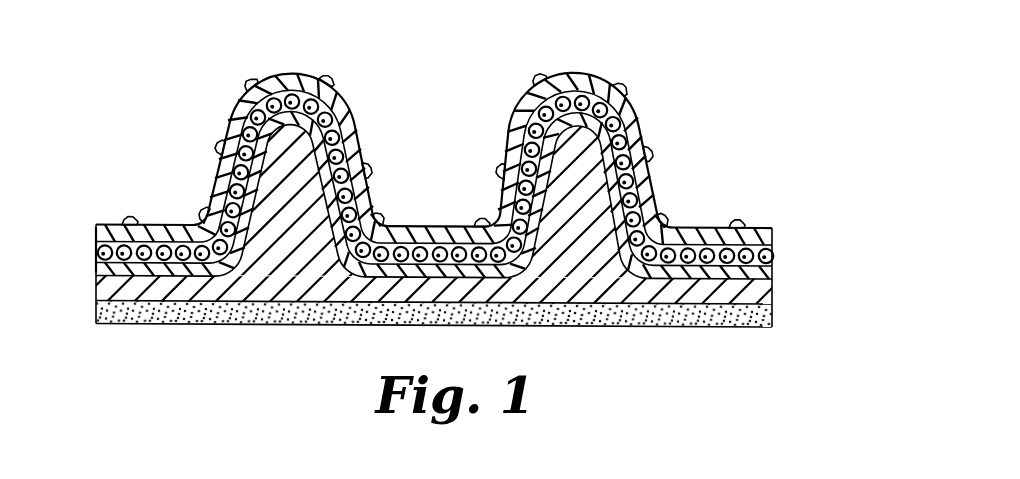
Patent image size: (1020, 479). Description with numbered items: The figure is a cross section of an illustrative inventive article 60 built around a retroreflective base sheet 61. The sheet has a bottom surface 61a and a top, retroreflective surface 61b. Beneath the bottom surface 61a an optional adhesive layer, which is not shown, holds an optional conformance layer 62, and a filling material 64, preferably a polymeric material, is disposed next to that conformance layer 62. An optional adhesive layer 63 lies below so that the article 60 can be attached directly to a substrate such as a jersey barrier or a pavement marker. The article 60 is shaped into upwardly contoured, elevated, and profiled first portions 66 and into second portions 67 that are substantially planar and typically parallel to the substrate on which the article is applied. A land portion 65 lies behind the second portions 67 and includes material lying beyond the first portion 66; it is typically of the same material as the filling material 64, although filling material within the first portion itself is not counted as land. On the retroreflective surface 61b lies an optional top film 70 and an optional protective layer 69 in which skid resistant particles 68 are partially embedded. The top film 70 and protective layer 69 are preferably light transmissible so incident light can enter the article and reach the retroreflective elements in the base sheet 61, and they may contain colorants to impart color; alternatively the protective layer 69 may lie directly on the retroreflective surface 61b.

The article 60 is at (664, 68).
The retroreflective base sheet 61 is at (447, 221).
The bottom surface 61a is at (729, 272).
The retroreflective surface 61b is at (763, 246).
The conformance layer 62 is at (772, 278).
The adhesive layer 63 is at (597, 327).
The filling material 64 is at (583, 148).
The land portion 65 is at (773, 303).
The first portions 66 is at (343, 119).
The second portions 67 is at (453, 243).
The skid resistant particles 68 is at (132, 217).
The protective layer 69 is at (293, 74).
The top film 70 is at (99, 242).